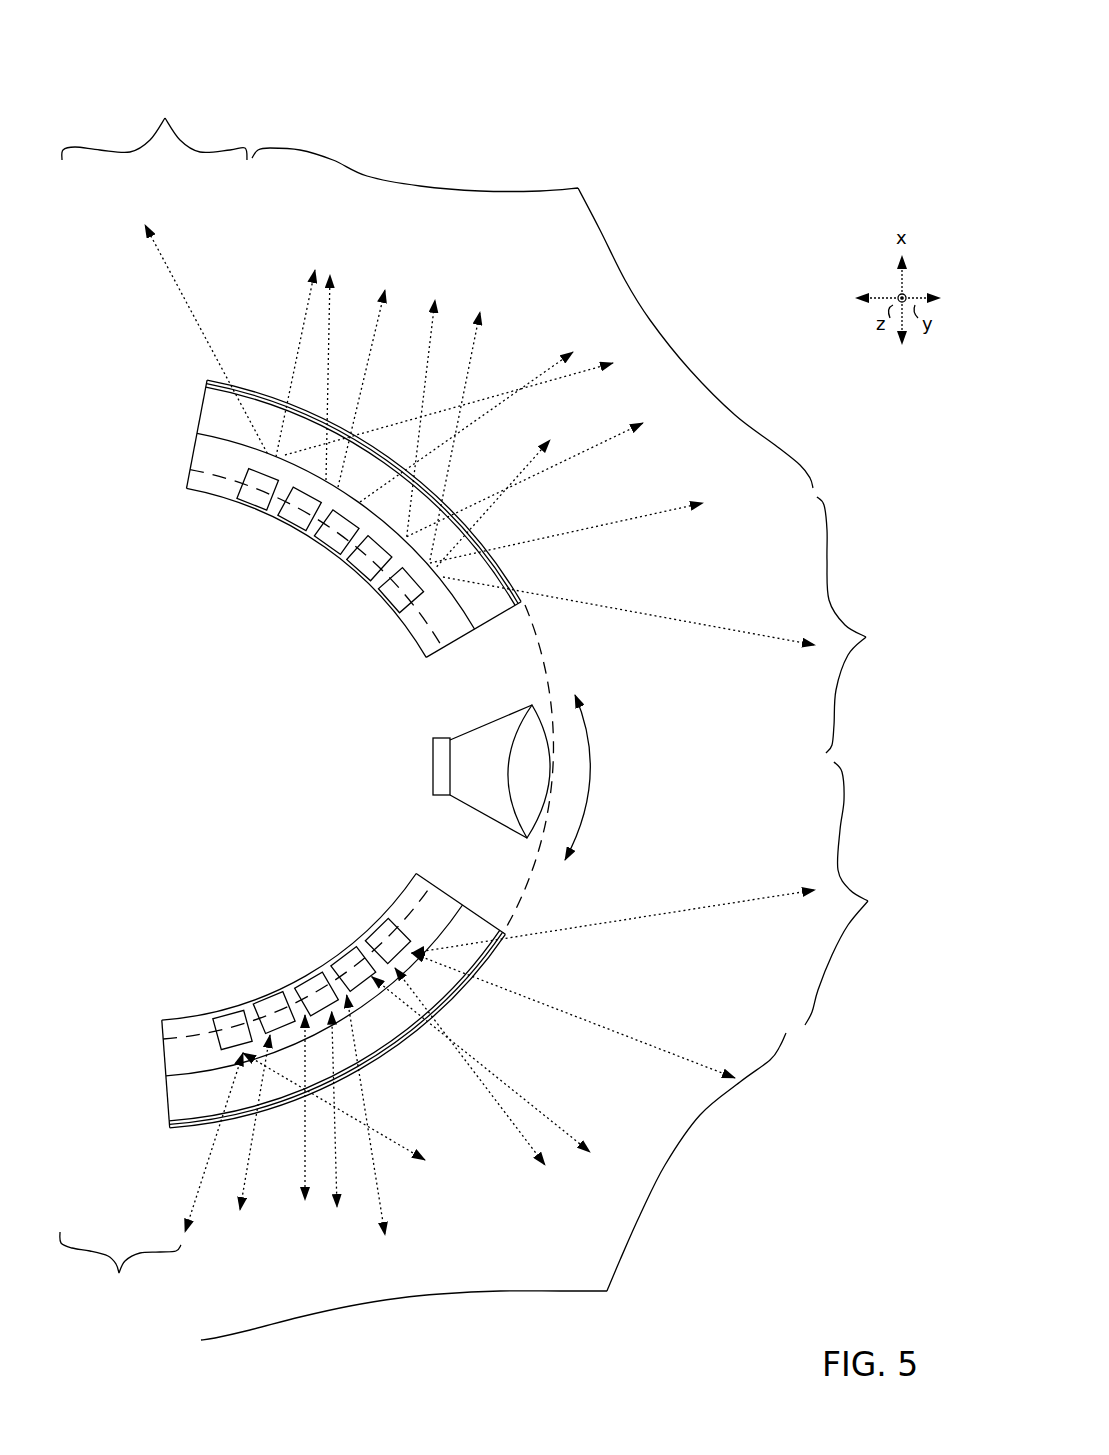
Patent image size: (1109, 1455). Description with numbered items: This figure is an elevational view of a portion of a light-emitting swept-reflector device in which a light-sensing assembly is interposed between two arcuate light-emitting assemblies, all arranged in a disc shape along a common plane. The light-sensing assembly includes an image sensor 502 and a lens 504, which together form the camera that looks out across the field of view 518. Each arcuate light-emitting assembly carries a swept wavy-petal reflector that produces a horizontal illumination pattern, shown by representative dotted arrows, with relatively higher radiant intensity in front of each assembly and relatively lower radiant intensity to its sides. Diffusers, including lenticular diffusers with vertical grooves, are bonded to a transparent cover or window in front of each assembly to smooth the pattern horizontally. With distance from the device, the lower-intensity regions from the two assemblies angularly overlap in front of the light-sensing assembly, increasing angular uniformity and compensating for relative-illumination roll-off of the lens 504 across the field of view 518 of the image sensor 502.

The image sensor 502 is at (441, 796).
The lens 504 is at (527, 838).
The field of view 518 is at (567, 769).